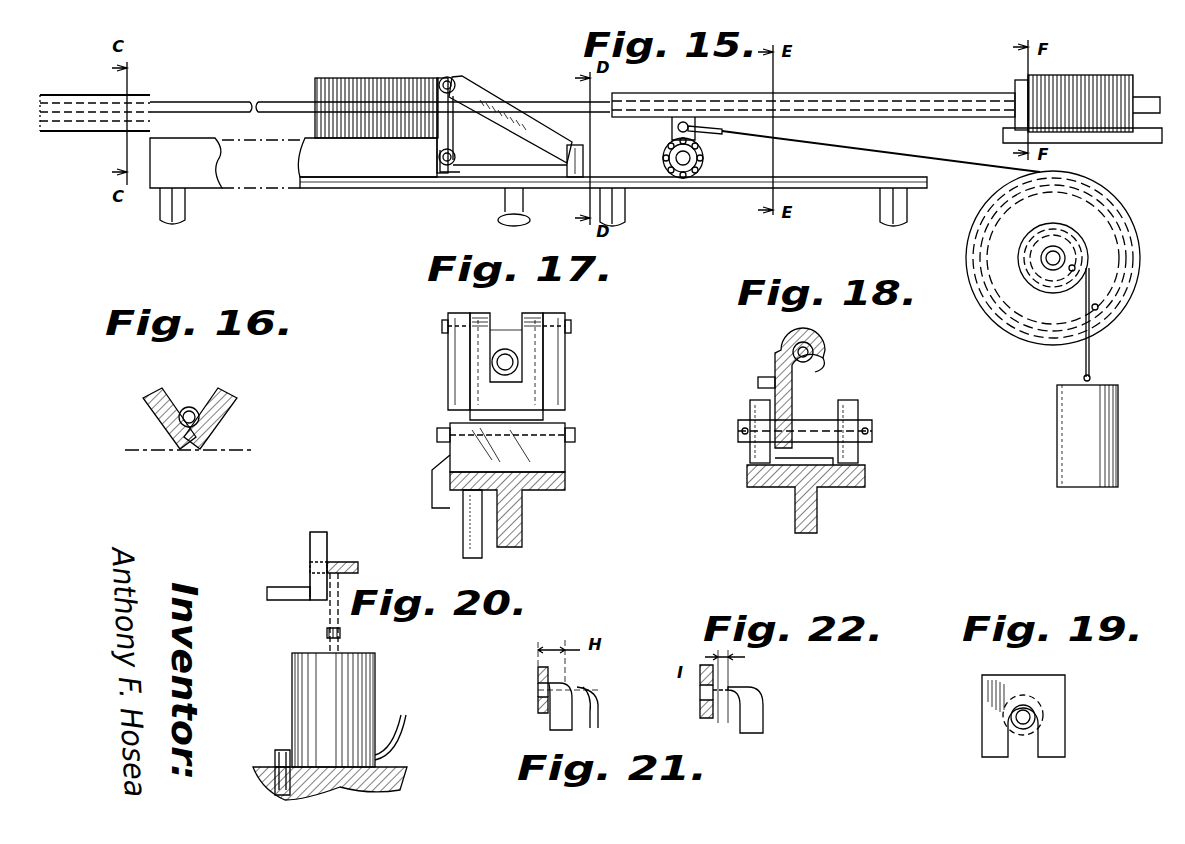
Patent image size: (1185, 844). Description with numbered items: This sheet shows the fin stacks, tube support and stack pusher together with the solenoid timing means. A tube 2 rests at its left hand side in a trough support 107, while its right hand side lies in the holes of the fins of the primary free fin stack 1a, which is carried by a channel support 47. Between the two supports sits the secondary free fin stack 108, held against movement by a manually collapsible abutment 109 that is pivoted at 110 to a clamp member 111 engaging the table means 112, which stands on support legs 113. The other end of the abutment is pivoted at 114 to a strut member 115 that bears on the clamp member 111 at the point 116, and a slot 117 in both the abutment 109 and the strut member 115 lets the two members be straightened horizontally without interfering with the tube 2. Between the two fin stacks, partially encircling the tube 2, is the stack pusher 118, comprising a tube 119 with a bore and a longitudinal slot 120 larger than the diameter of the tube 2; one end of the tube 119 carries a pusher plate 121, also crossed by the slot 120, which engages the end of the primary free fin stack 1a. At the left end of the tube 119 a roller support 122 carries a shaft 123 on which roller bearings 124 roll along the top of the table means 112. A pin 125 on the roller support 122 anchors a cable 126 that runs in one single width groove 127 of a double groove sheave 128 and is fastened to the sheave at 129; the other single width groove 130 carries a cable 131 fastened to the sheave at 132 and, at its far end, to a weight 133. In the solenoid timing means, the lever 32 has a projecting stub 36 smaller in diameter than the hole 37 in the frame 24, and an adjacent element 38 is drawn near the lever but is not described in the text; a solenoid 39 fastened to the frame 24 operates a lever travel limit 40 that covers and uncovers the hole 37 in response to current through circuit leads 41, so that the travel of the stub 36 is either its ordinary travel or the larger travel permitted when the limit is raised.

In FIG. 15, the primary free fin stack 1a is at (1090, 76).
In FIG. 15, the tube 2 is at (258, 100).
In FIG. 16, the tube 2 is at (195, 408).
In FIG. 17, the tube 2 is at (505, 375).
In FIG. 18, the tube 2 is at (808, 335).
In FIG. 19, the tube 2 is at (1035, 728).
In FIG. 20, the frame 24 is at (327, 540).
In FIG. 20, the lever 32 is at (358, 565).
In FIG. 20, the projecting stub 36 is at (310, 566).
In FIG. 20, the hole 37 is at (310, 540).
In FIG. 20, the arm 38 is at (275, 598).
In FIG. 20, the solenoid 39 is at (292, 701).
In FIG. 20, the lever travel limit 40 is at (327, 634).
In FIG. 20, the circuit leads 41 is at (405, 735).
In FIG. 15, the channel support 47 is at (1128, 143).
In FIG. 15, the trough support 107 is at (75, 120).
In FIG. 16, the trough support 107 is at (150, 398).
In FIG. 15, the secondary free fin stack 108 is at (390, 78).
In FIG. 15, the manually collapsible abutment 109 is at (450, 125).
In FIG. 17, the manually collapsible abutment 109 is at (566, 380).
In FIG. 15, the pivot 110 is at (456, 158).
In FIG. 17, the pivot 110 is at (575, 435).
In FIG. 15, the clamp member 111 is at (552, 172).
In FIG. 17, the clamp member 111 is at (432, 490).
In FIG. 15, the table means 112 is at (392, 180).
In FIG. 17, the table means 112 is at (540, 490).
In FIG. 18, the table means 112 is at (797, 480).
In FIG. 15, the support legs 113 is at (185, 206).
In FIG. 15, the pivot 114 is at (455, 82).
In FIG. 17, the pivot 114 is at (571, 324).
In FIG. 15, the strut member 115 is at (510, 112).
In FIG. 17, the strut member 115 is at (470, 349).
In FIG. 15, the engagement point 116 is at (583, 155).
In FIG. 17, the slot 117 is at (505, 328).
In FIG. 15, the stack pusher 118 is at (888, 93).
In FIG. 15, the tube 119 is at (825, 98).
In FIG. 18, the tube 119 is at (822, 345).
In FIG. 19, the tube 119 is at (1043, 712).
In FIG. 18, the longitudinal slot 120 is at (825, 368).
In FIG. 19, the longitudinal slot 120 is at (1020, 748).
In FIG. 15, the pusher plate 121 is at (1017, 85).
In FIG. 19, the pusher plate 121 is at (990, 692).
In FIG. 15, the roller support 122 is at (678, 127).
In FIG. 18, the roller support 122 is at (780, 344).
In FIG. 15, the shaft 123 is at (683, 158).
In FIG. 18, the shaft 123 is at (808, 420).
In FIG. 18, the roller bearings 124 is at (750, 428).
In FIG. 15, the pin 125 is at (720, 128).
In FIG. 18, the pin 125 is at (758, 380).
In FIG. 15, the cable 126 is at (885, 150).
In FIG. 15, the single width groove 127 is at (1140, 262).
In FIG. 15, the double groove sheave 128 is at (1085, 215).
In FIG. 15, the cable fastening 129 is at (1098, 309).
In FIG. 15, the single width groove 130 is at (1010, 258).
In FIG. 15, the cable 131 is at (1090, 352).
In FIG. 15, the cable fastening 132 is at (1075, 265).
In FIG. 15, the weight 133 is at (1085, 426).